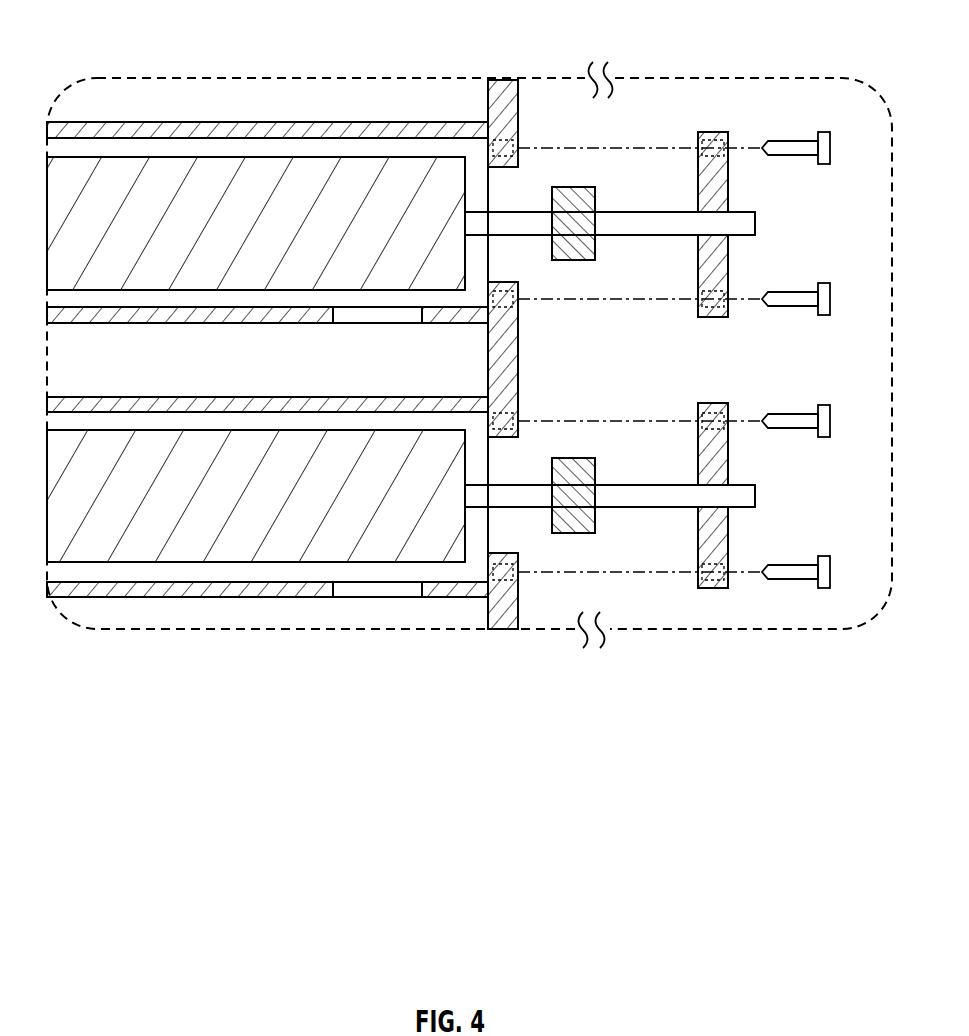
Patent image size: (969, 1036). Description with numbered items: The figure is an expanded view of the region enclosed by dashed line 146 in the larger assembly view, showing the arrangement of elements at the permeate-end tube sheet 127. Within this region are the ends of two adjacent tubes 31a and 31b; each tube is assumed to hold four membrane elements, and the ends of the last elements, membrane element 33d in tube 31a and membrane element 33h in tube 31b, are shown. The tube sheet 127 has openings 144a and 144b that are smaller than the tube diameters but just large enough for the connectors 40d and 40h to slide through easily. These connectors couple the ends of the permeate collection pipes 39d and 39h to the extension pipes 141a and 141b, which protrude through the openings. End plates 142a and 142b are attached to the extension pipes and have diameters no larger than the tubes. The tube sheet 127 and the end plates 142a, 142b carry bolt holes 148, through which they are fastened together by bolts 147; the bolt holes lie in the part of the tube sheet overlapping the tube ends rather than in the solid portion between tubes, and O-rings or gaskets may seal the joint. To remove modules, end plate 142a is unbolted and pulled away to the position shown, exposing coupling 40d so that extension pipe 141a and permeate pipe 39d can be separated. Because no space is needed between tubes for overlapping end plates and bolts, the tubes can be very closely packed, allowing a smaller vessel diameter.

The dashed line 146 is at (168, 78).
The permeate-end tube sheet 127 is at (504, 84).
The tube 31a is at (230, 122).
The tube 31b is at (155, 597).
The membrane element 33d is at (326, 175).
The membrane element 33h is at (268, 543).
The opening 144a is at (512, 165).
The opening 144b is at (512, 440).
The permeate collection pipe 39d is at (547, 240).
The permeate collection pipe 39h is at (547, 512).
The connector 40d is at (596, 195).
The connector 40h is at (596, 467).
The extension pipe 141a is at (755, 233).
The extension pipe 141b is at (755, 507).
The end plate 142a is at (705, 132).
The end plate 142b is at (702, 588).
The bolt 147 is at (831, 308).
The bolt hole 148 is at (698, 415).